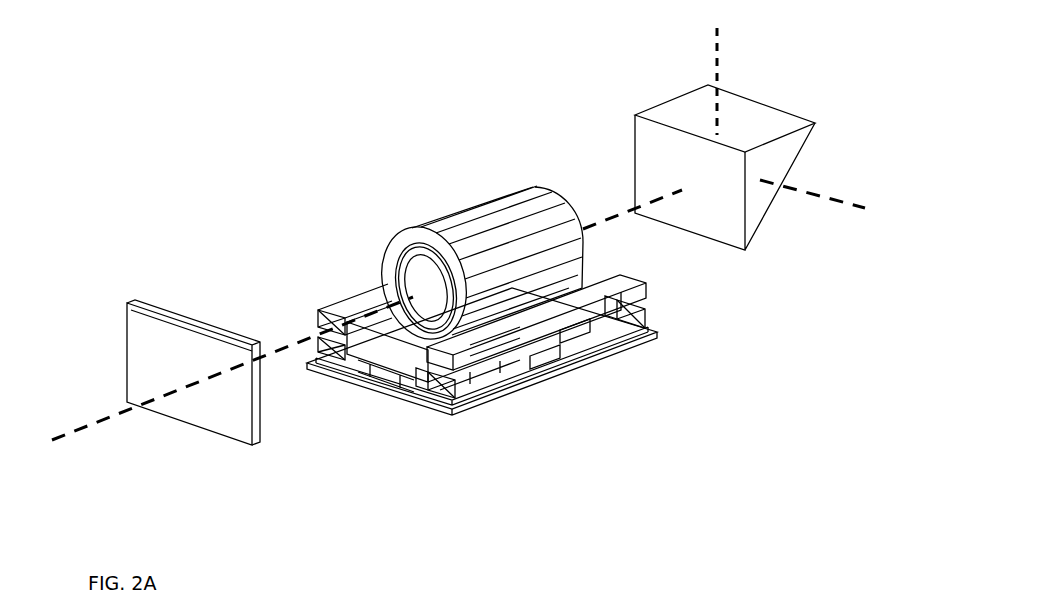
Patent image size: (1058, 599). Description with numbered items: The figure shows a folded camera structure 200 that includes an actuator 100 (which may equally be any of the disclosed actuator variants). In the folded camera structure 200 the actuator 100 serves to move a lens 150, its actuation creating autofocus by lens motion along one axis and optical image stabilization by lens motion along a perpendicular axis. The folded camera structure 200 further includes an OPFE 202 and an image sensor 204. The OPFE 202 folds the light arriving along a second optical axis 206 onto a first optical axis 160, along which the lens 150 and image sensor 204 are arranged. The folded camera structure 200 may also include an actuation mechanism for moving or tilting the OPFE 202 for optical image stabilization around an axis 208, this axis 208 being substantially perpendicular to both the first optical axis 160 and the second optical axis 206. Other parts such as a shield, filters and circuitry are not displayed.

The folded camera structure 200 is at (487, 127).
The OPFE 202 is at (658, 165).
The image sensor 204 is at (193, 340).
The second optical axis 206 is at (722, 75).
The axis 208 is at (820, 193).
The lens 150 is at (410, 265).
The first optical axis 160 is at (117, 413).
The actuator 100 is at (672, 327).